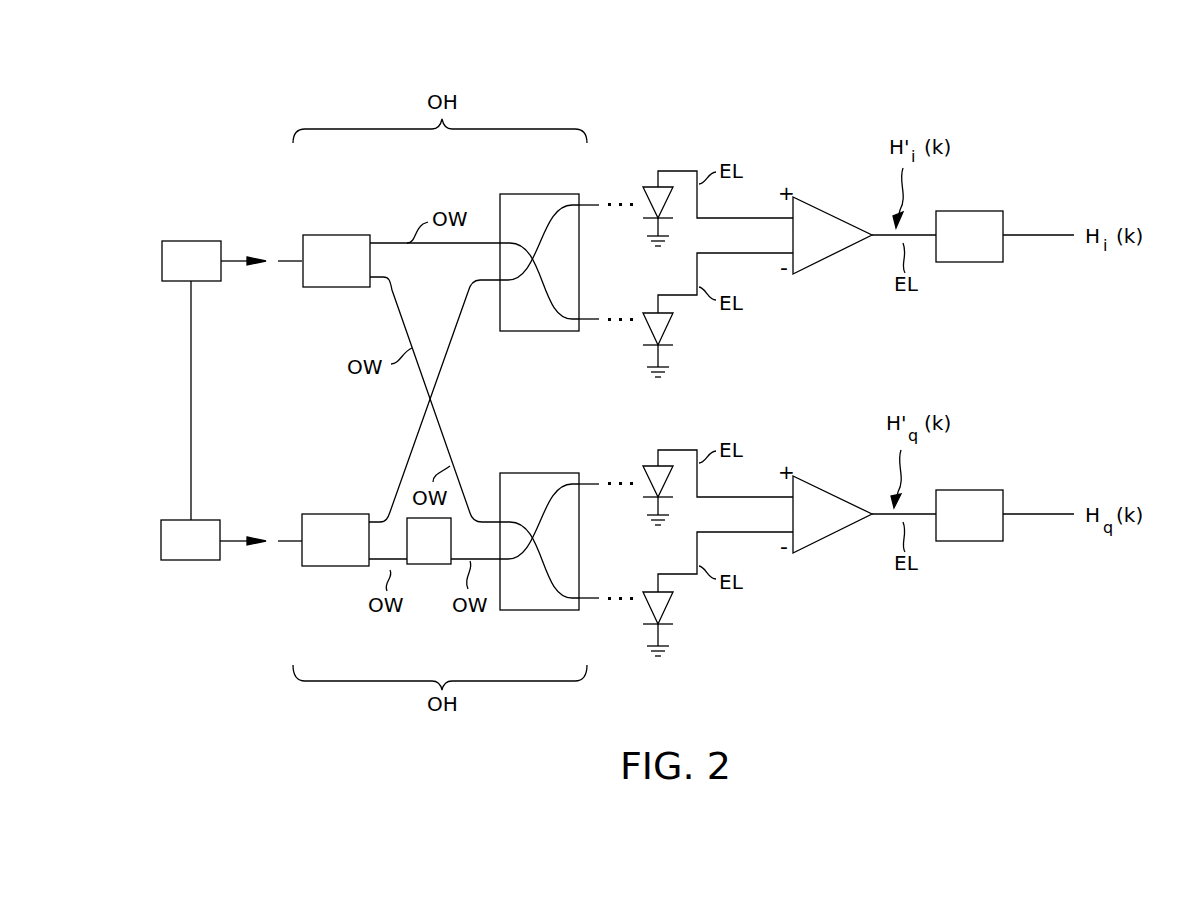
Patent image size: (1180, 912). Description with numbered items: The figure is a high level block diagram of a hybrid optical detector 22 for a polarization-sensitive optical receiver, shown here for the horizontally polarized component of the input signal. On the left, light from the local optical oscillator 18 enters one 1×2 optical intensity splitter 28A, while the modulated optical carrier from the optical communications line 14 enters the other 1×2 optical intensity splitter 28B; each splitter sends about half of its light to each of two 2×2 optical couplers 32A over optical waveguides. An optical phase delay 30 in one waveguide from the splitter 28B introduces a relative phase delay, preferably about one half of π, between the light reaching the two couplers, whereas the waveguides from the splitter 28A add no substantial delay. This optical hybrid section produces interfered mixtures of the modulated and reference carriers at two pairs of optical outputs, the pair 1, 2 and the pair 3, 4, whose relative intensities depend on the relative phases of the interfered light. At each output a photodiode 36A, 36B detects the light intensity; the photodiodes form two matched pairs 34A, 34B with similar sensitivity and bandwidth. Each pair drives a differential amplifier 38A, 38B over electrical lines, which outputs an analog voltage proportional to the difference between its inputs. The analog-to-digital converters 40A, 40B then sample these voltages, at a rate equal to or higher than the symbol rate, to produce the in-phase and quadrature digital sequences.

The hybrid optical detector 22 is at (838, 51).
The local optical oscillator 18 is at (205, 275).
The optical communications line 14 is at (204, 554).
The 1×2 optical intensity splitter 28A is at (358, 275).
The 1×2 optical intensity splitter 28B is at (357, 554).
The optical phase delay 30 is at (443, 555).
The 2×2 optical coupler 32A is at (528, 331).
The matched pair of photodiodes 34A is at (693, 159).
The matched pair of photodiodes 34B is at (681, 439).
The photodiode 36A is at (645, 186).
The photodiode 36B is at (645, 465).
The differential amplifier 38A is at (843, 249).
The differential amplifier 38B is at (843, 528).
The analog-to-digital converter 40A is at (993, 262).
The analog-to-digital converter 40B is at (993, 541).
The optical output 1 is at (597, 207).
The optical output 2 is at (597, 321).
The optical output 3 is at (597, 486).
The optical output 4 is at (597, 600).